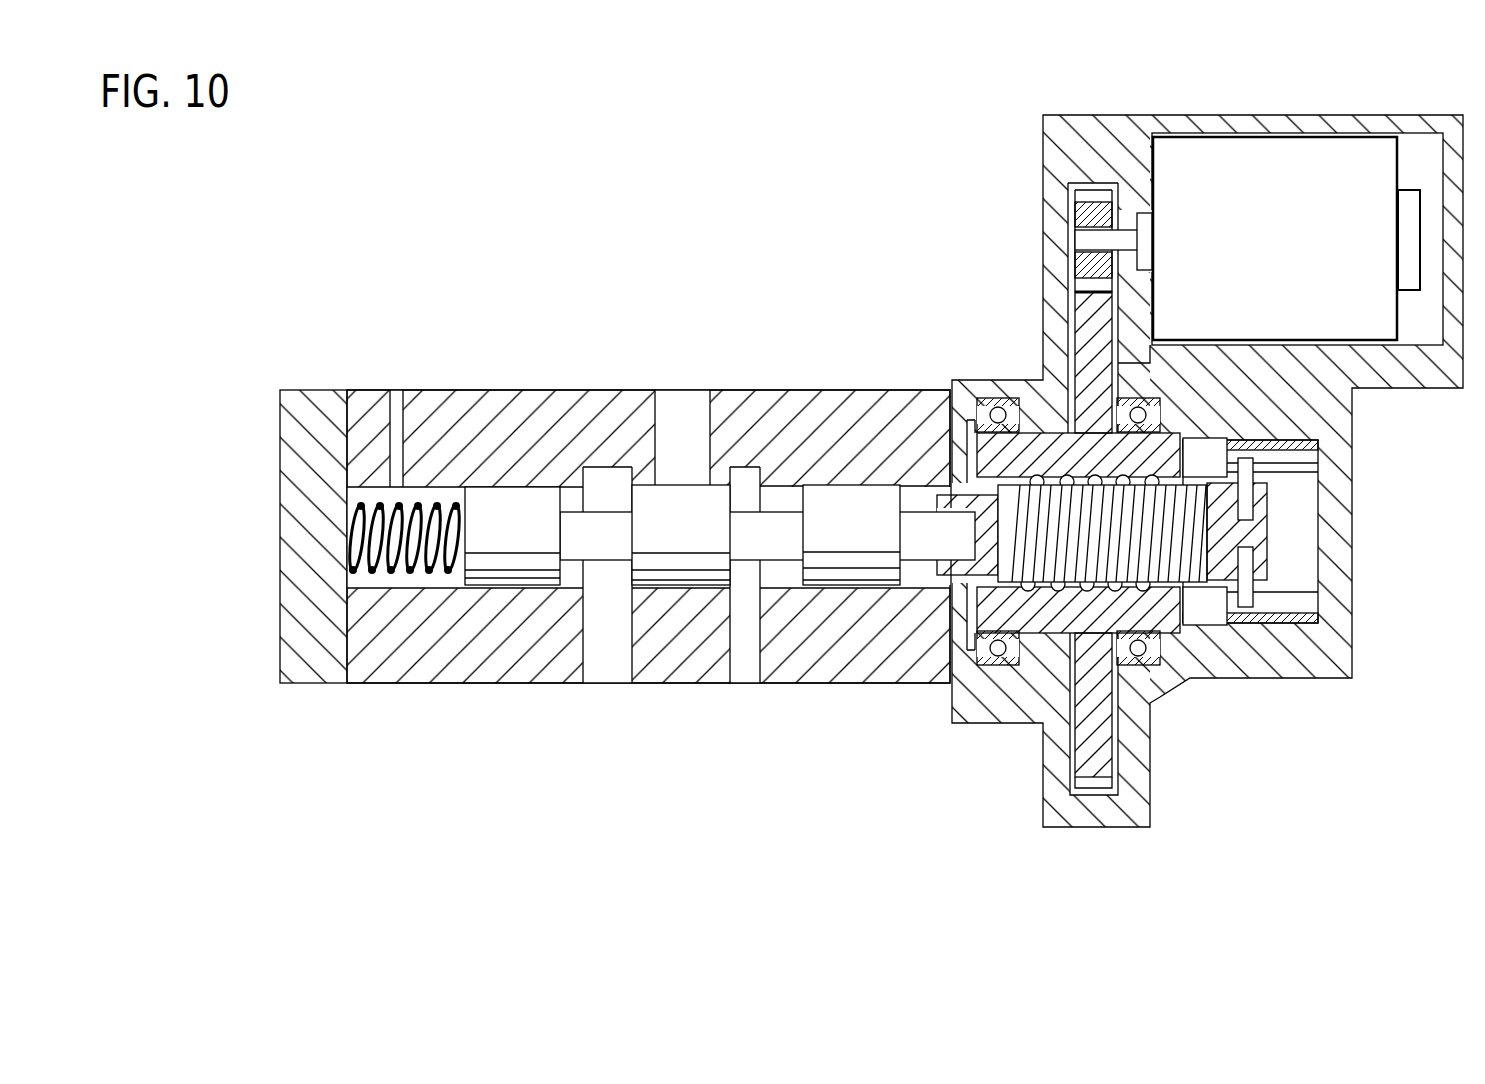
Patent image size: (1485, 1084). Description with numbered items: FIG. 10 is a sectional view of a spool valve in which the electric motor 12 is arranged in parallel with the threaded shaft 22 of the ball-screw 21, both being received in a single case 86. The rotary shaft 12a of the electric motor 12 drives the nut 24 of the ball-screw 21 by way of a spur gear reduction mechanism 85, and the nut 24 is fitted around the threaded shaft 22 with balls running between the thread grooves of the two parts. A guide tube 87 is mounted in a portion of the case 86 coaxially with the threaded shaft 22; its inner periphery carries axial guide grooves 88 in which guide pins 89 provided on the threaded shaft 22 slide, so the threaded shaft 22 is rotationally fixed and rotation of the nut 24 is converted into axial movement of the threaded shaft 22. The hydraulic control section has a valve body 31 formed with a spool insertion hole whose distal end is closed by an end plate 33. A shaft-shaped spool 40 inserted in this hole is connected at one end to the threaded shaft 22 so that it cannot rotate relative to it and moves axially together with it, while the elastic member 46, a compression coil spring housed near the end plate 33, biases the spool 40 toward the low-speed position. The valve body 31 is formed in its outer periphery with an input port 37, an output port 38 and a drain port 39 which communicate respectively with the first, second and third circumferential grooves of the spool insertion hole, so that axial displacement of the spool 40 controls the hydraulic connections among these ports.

The electric motor 12 is at (1263, 150).
The rotary shaft 12a is at (1122, 238).
The ball-screw 21 is at (1174, 424).
The threaded shaft 22 is at (1208, 478).
The nut 24 is at (1068, 448).
The valve body 31 is at (372, 384).
The end plate 33 is at (296, 402).
The input port 37 is at (749, 667).
The output port 38 is at (681, 398).
The drain port 39 is at (609, 667).
The spool 40 is at (517, 476).
The elastic member 46 is at (352, 534).
The spur gear reduction mechanism 85 is at (1060, 214).
The case 86 is at (1345, 412).
The guide tube 87 is at (1320, 445).
The axial guide grooves 88 is at (1285, 600).
The guide pins 89 is at (1249, 607).